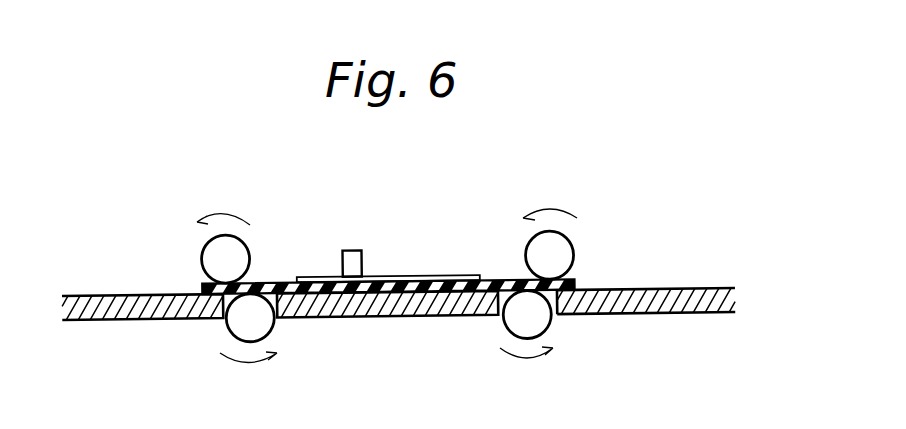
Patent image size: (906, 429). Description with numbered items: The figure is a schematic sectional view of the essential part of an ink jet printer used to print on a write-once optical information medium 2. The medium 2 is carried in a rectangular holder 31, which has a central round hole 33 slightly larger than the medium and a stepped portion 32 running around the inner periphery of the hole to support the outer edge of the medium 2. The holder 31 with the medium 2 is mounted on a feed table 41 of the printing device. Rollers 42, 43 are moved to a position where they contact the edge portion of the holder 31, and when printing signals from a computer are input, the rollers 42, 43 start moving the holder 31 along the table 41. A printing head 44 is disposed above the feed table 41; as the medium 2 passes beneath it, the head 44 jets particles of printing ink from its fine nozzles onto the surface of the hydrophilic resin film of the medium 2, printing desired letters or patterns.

The optical information medium 2 is at (430, 277).
The holder 31 is at (278, 282).
The stepped portion 32 is at (473, 290).
The round hole 33 is at (460, 278).
The feed table 41 is at (132, 308).
The roller 42 is at (247, 322).
The roller 43 is at (215, 255).
The printing head 44 is at (355, 258).